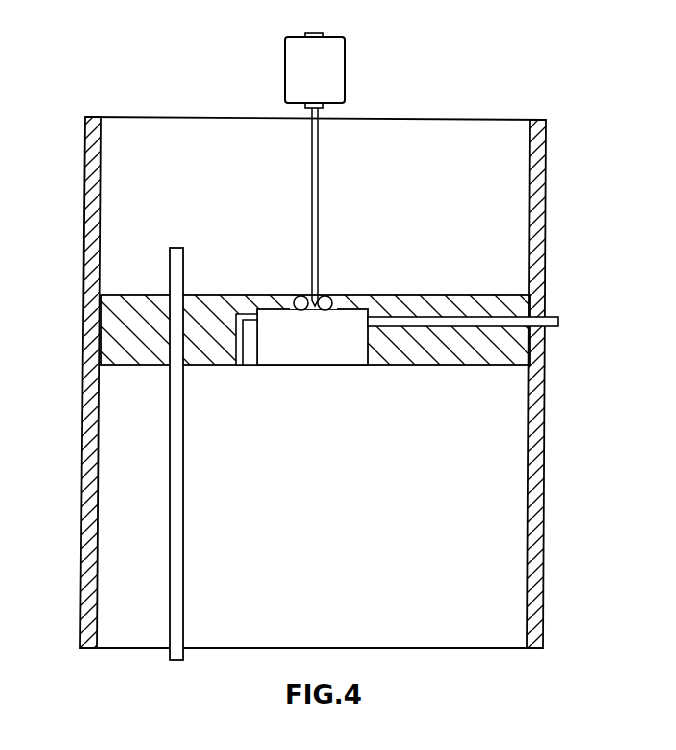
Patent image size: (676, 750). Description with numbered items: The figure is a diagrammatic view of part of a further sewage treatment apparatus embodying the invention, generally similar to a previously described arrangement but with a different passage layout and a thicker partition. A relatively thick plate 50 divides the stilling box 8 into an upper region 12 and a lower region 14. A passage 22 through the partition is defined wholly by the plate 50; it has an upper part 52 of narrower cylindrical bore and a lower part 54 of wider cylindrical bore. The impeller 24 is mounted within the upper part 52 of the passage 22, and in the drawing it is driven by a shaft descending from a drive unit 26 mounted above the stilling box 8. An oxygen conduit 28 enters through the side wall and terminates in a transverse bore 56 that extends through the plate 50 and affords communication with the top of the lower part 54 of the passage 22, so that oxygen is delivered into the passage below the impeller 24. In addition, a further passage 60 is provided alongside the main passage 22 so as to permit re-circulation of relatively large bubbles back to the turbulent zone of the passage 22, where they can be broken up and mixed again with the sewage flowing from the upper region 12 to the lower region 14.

The stilling box 8 is at (548, 618).
The upper region 12 is at (88, 192).
The lower region 14 is at (127, 491).
The passage 22 is at (331, 372).
The impeller 24 is at (323, 296).
The drive motor 26 is at (330, 71).
The oxygen conduit 28 is at (550, 316).
The plate 50 is at (108, 348).
The upper part 52 is at (338, 306).
The lower part 54 is at (263, 352).
The transverse bore 56 is at (465, 320).
The passage 60 is at (240, 313).